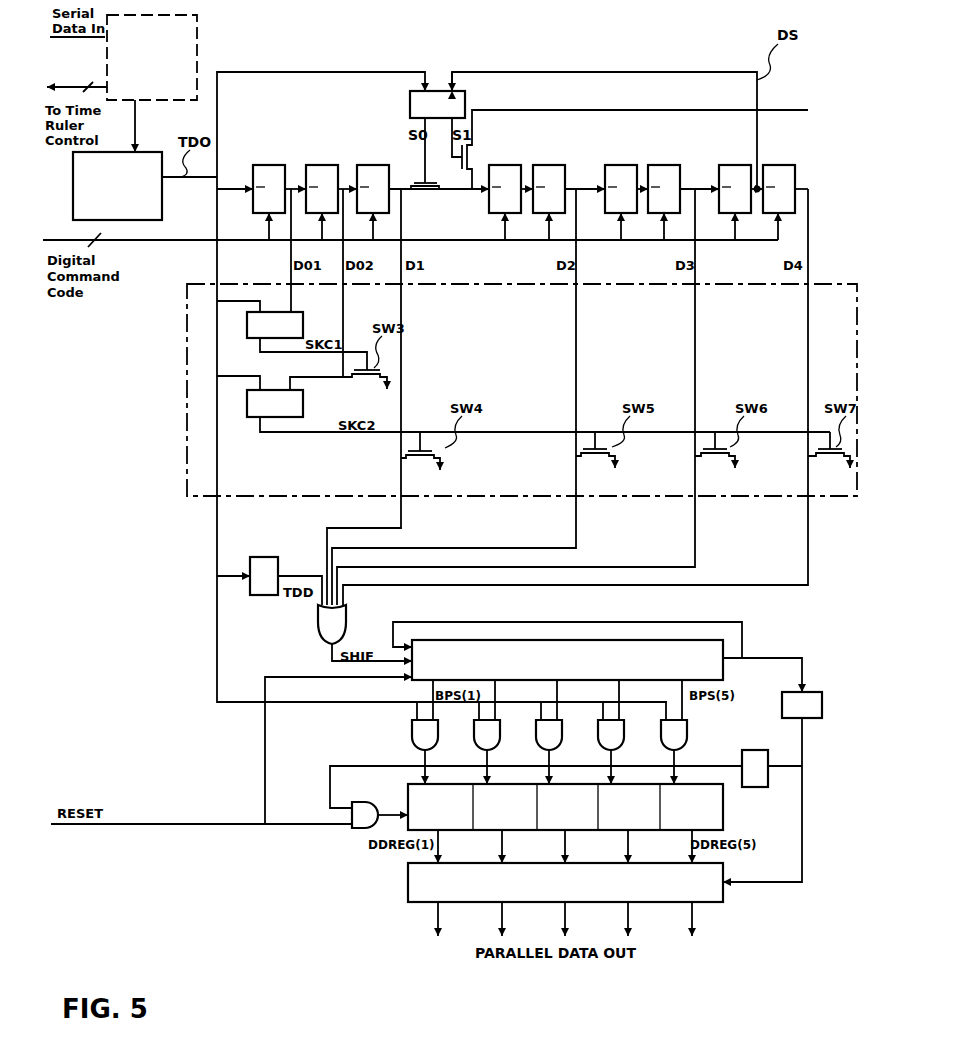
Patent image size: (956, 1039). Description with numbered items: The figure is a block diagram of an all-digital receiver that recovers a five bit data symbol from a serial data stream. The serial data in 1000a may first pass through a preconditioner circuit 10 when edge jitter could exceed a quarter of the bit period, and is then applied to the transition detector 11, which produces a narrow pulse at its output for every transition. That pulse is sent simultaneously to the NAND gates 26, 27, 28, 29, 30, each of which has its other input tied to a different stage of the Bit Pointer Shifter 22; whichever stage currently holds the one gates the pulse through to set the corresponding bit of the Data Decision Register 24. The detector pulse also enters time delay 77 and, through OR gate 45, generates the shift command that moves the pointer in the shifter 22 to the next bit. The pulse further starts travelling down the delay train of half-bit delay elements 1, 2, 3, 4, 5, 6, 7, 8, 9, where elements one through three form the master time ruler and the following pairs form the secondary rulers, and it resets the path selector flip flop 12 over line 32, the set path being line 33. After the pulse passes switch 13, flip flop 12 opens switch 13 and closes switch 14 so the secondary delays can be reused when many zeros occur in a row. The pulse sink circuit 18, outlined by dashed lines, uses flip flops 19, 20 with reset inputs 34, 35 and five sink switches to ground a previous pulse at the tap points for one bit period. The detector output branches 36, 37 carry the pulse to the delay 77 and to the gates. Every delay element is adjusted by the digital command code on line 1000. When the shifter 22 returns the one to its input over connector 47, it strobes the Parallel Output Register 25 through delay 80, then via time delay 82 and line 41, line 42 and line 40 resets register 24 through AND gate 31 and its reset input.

The preconditioner circuit 10 is at (197, 45).
The transition detector 11 is at (140, 152).
The serial data input 1000a is at (67, 83).
The digital command code line 1000 is at (153, 246).
The delay element 1 is at (280, 165).
The delay element 2 is at (328, 165).
The delay element 3 is at (376, 165).
The delay element 4 is at (515, 165).
The delay element 5 is at (558, 165).
The delay element 6 is at (628, 165).
The delay element 7 is at (674, 165).
The delay element 8 is at (735, 165).
The delay element 9 is at (785, 165).
The path selector flip flop 12 is at (437, 91).
The switch 13 is at (428, 190).
The switch 14 is at (474, 160).
The reset line 32 is at (315, 72).
The set line 33 is at (550, 72).
The pulse sink function circuit 18 is at (186, 385).
The flip flop 19 is at (303, 330).
The flip flop 20 is at (303, 408).
The reset input line 34 is at (255, 302).
The reset input line 35 is at (255, 378).
The transition detector output line 36 is at (217, 576).
The time delay 77 is at (280, 557).
The transition detector output line 37 is at (215, 662).
The OR gate 45 is at (347, 628).
The connector 47 is at (540, 622).
The Bit Pointer Shifter 22 is at (695, 640).
The delay 80 is at (817, 692).
The NAND gate 26 is at (412, 745).
The NAND gate 27 is at (474, 745).
The NAND gate 28 is at (536, 745).
The NAND gate 29 is at (598, 745).
The NAND gate 30 is at (661, 745).
The Data Decision Register 24 is at (702, 784).
The delay input line 41 is at (772, 768).
The time delay 82 is at (755, 787).
The load line 42 is at (808, 830).
The line 40 is at (330, 768).
The AND gate 31 is at (355, 828).
The Parallel Output Register 25 is at (408, 880).